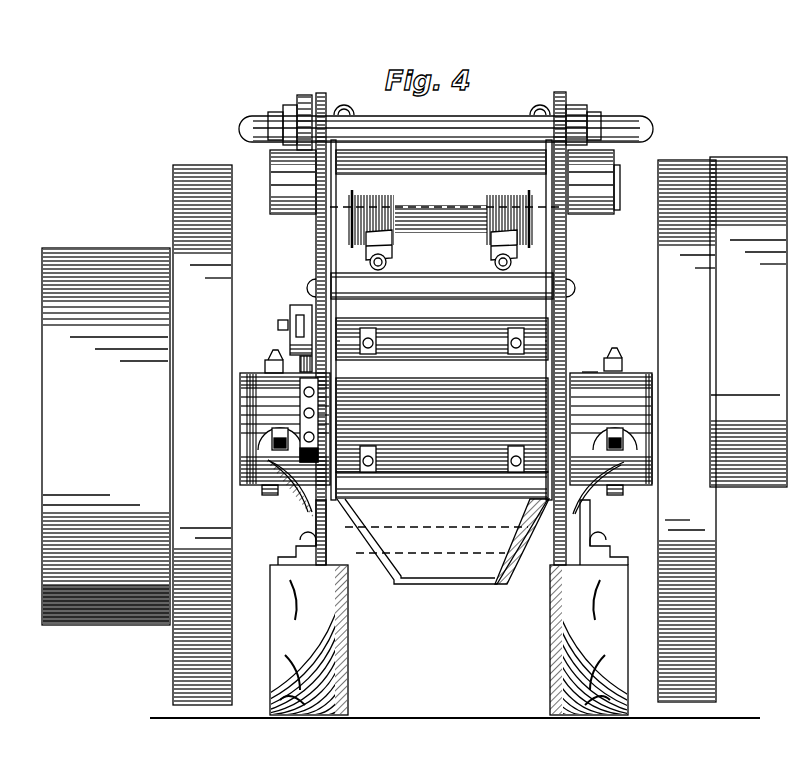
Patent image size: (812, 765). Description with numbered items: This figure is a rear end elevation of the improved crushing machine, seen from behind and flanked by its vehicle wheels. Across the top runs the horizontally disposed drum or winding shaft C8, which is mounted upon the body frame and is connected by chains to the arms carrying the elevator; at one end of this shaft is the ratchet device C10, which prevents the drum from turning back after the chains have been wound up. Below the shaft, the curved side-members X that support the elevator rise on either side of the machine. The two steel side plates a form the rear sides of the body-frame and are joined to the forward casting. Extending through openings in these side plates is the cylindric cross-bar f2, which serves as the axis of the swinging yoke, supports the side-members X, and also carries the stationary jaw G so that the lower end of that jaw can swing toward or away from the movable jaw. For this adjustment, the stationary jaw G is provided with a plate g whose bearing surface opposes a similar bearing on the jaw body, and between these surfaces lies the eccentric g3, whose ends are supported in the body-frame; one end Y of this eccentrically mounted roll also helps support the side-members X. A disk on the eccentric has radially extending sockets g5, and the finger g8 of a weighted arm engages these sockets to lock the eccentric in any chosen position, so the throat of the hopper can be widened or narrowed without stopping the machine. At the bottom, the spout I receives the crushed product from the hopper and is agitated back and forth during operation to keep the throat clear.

The drum or winding shaft C8 is at (502, 124).
The ratchet device C10 is at (308, 108).
The curved side-member X is at (326, 100).
The end of eccentrically mounted roll Y is at (589, 367).
The cylindric cross-bar f2 is at (616, 176).
The stationary jaw G is at (460, 258).
The plate g is at (523, 403).
The steel side plate a is at (331, 438).
The spout I is at (455, 570).
The eccentric g3 is at (300, 400).
The radially extending sockets or openings g5 is at (298, 360).
The finger g8 is at (308, 358).